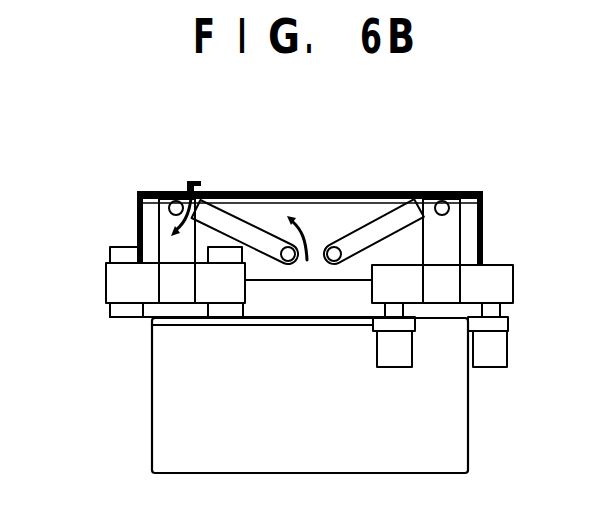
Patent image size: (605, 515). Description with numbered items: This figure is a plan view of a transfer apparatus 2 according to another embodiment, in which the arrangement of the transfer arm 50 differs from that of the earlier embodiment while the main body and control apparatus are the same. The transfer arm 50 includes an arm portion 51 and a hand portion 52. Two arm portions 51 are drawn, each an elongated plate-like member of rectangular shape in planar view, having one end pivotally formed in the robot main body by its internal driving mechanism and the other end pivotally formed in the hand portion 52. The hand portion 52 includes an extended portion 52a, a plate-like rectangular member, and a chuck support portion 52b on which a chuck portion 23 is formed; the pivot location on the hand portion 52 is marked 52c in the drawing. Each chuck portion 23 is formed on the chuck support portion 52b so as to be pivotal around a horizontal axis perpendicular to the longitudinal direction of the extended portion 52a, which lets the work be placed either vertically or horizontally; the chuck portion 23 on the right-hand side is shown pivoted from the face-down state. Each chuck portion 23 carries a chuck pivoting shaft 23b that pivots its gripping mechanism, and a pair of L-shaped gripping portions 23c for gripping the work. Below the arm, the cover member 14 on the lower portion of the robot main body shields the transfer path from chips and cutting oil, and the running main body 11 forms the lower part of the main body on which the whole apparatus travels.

The transfer apparatus 2 is at (241, 140).
The transfer arm 50 is at (187, 170).
The arm portion 51 is at (271, 244).
The hand portion 52 is at (98, 135).
The extended portion 52a is at (160, 240).
The chuck support portion 52b is at (135, 262).
The shaft hole 52c is at (156, 198).
The chuck portion 23 is at (604, 270).
The chuck pivoting shaft 23b is at (500, 310).
The gripping portions 23c is at (110, 301).
The cover member 14 is at (150, 322).
The running main body 11 is at (158, 388).